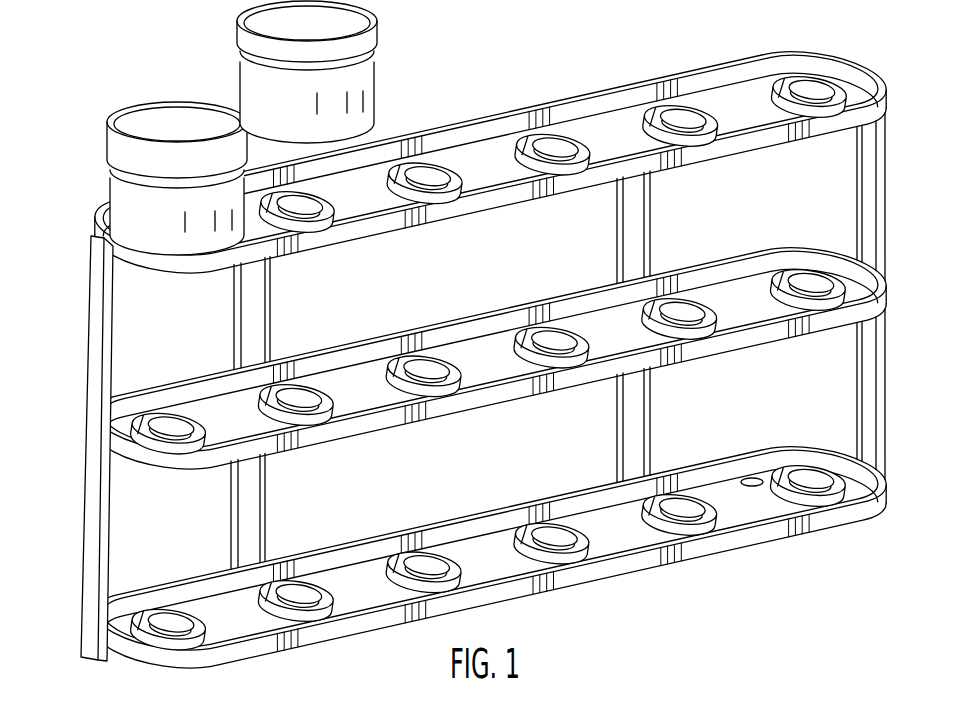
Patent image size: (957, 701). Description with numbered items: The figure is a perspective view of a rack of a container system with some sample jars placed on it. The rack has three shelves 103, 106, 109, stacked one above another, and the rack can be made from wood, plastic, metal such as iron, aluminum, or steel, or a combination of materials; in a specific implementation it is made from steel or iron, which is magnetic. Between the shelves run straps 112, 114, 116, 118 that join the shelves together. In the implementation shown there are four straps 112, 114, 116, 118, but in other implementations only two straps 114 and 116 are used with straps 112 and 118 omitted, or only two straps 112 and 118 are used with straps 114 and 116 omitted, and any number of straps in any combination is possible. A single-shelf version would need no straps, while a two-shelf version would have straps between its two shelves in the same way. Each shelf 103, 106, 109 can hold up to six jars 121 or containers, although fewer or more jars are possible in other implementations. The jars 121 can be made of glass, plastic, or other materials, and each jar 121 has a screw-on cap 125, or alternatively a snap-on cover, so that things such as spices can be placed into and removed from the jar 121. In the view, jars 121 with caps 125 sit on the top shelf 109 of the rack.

The shelf 103 is at (400, 530).
The shelf 106 is at (390, 334).
The shelf 109 is at (550, 103).
The strap 112 is at (89, 304).
The strap 114 is at (234, 318).
The strap 116 is at (615, 222).
The strap 118 is at (858, 187).
The jar 121 is at (339, 72).
The screw-on cap 125 is at (378, 28).